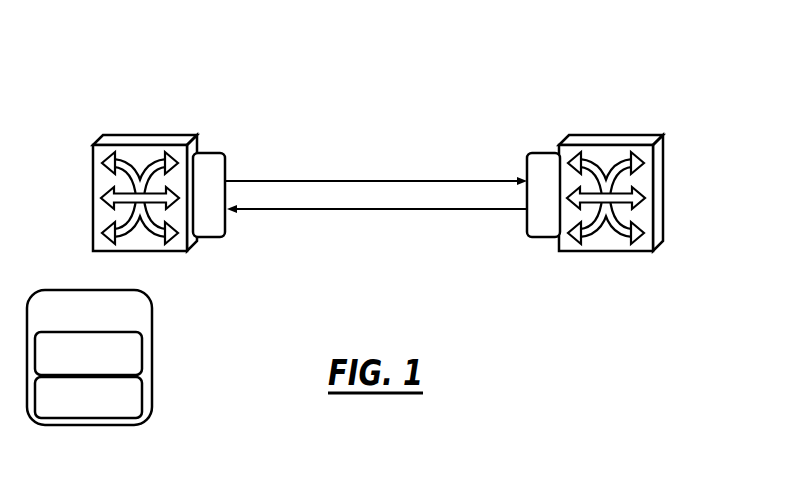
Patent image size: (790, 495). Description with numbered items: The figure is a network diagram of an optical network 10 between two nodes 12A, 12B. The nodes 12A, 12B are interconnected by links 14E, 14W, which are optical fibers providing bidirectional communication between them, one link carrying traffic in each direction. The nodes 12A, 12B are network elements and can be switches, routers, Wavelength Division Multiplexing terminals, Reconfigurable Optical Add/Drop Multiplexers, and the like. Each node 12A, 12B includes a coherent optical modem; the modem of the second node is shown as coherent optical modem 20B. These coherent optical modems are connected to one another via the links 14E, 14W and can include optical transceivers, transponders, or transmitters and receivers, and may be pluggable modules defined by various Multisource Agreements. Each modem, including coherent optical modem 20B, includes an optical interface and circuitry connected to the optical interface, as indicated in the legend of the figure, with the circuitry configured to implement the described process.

The optical network 10 is at (405, 37).
The node 12A is at (160, 135).
The node 12B is at (617, 135).
The link 14E is at (382, 181).
The link 14W is at (413, 209).
The coherent optical modem 20B is at (547, 237).